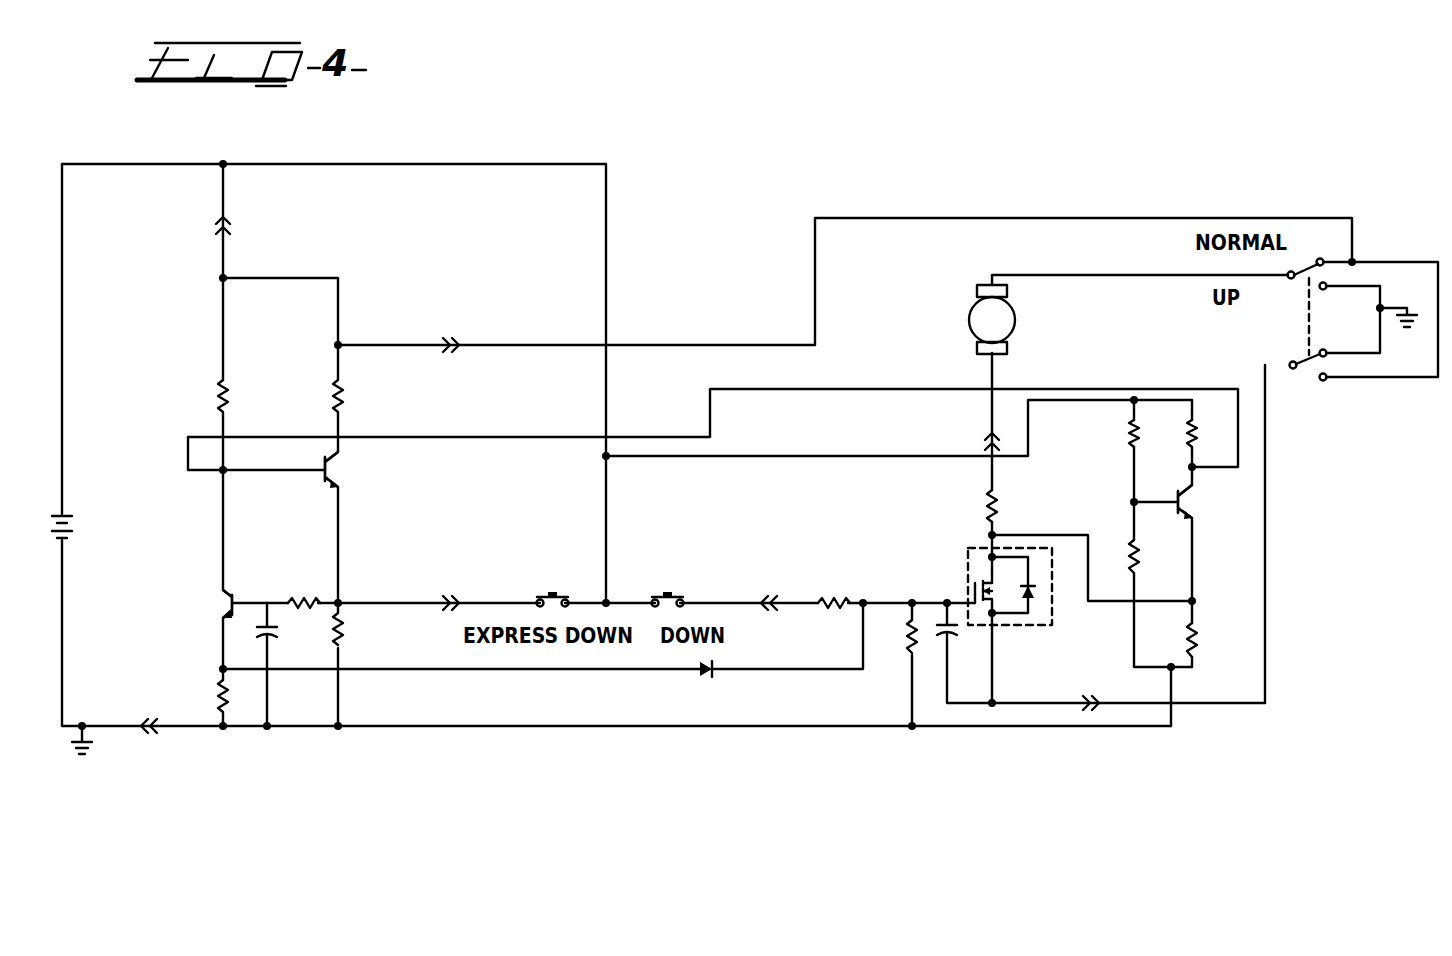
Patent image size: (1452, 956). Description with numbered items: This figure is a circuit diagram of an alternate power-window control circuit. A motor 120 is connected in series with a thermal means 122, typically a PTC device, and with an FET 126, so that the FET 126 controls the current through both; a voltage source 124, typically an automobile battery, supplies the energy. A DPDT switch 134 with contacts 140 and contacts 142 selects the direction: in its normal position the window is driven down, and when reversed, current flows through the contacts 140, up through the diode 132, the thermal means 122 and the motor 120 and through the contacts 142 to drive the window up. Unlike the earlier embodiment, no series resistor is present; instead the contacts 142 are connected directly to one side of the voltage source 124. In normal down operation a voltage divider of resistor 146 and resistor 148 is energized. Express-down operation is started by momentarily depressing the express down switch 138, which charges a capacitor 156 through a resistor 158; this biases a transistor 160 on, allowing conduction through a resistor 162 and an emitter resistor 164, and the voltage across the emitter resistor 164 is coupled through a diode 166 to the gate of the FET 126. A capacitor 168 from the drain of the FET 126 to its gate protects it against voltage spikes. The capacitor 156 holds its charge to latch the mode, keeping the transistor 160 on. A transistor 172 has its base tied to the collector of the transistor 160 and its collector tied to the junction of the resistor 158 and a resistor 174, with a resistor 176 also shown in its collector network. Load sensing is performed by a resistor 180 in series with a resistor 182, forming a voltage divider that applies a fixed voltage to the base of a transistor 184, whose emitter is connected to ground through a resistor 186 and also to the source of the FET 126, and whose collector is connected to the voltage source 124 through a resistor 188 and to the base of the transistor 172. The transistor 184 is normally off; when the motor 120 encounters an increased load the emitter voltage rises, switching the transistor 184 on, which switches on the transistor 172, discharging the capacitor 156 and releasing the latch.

The motor 120 is at (1015, 322).
The thermal means 122 is at (1000, 515).
The voltage source 124 is at (64, 512).
The FET 126 is at (968, 580).
The diode 132 is at (1032, 598).
The DPDT switch 134 is at (1308, 315).
The express down switch 138 is at (560, 597).
The contacts 140 is at (1325, 363).
The contacts 142 is at (1340, 276).
The resistor 146 is at (860, 585).
The resistor 148 is at (910, 655).
The capacitor 156 is at (270, 636).
The resistor 158 is at (318, 598).
The transistor 160 is at (224, 605).
The resistor 162 is at (226, 400).
The emitter resistor 164 is at (215, 700).
The diode 166 is at (712, 674).
The capacitor 168 is at (947, 637).
The transistor 172 is at (343, 476).
The resistor 174 is at (364, 633).
The resistor 176 is at (345, 405).
The resistor 180 is at (1130, 434).
The resistor 182 is at (1137, 548).
The transistor 184 is at (1185, 503).
The resistor 186 is at (1196, 632).
The resistor 188 is at (1196, 426).